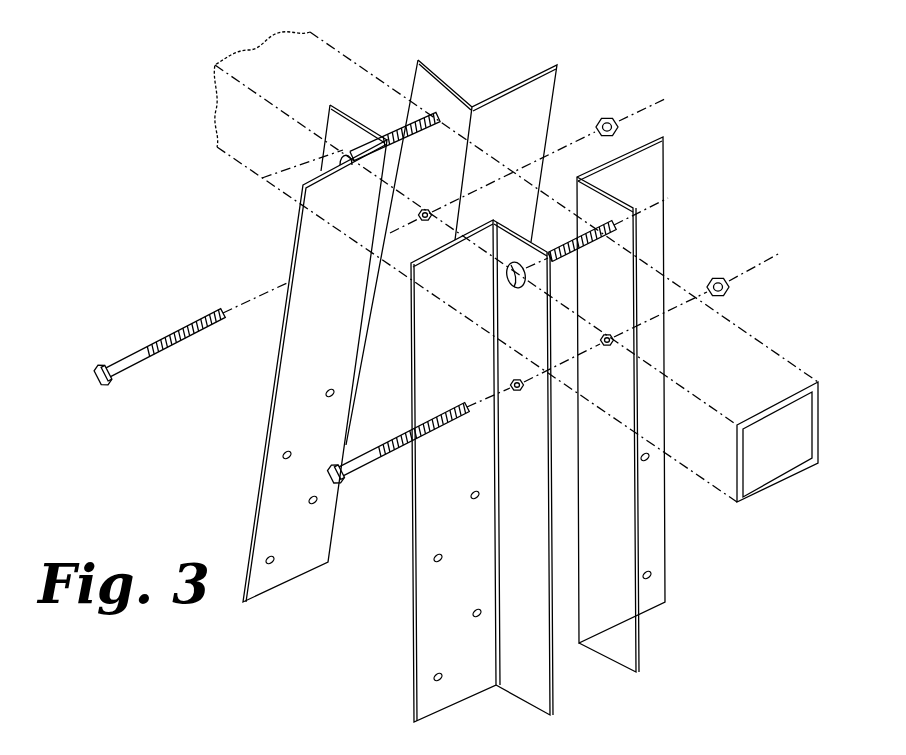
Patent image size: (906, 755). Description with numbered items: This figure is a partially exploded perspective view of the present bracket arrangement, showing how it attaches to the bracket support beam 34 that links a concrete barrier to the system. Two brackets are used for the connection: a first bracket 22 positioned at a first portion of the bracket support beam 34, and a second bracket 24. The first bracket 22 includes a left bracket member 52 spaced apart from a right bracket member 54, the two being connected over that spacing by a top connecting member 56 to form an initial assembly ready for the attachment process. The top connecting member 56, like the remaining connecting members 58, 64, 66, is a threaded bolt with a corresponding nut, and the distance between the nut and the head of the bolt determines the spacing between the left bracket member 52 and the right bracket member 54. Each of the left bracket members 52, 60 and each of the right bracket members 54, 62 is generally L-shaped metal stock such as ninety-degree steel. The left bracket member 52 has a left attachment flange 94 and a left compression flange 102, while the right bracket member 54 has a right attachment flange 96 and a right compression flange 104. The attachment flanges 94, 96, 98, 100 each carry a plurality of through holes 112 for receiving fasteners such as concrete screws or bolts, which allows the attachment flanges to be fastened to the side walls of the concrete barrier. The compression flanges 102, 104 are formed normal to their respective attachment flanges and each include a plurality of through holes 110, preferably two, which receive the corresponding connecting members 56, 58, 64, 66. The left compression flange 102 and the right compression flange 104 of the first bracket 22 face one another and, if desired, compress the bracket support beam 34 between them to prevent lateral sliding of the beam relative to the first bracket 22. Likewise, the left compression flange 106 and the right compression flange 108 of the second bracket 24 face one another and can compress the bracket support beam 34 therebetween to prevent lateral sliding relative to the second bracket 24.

The bracket 22 is at (406, 302).
The second bracket 24 is at (524, 430).
The bracket support beam 34 is at (785, 357).
The left bracket member 52 is at (298, 353).
The right bracket member 54 is at (474, 232).
The top connecting member 56 is at (397, 130).
The connecting member 58 is at (160, 337).
The left bracket member 60 is at (450, 487).
The right bracket member 62 is at (657, 422).
The connecting member 64 is at (588, 245).
The connecting member 66 is at (388, 468).
The left attachment flange 94 is at (347, 266).
The right attachment flange 96 is at (523, 133).
The left attachment flange 98 is at (467, 361).
The right attachment flange 100 is at (652, 188).
The left compression flange 102 is at (333, 147).
The right compression flange 104 is at (428, 97).
The left compression flange 106 is at (528, 681).
The right compression flange 108 is at (620, 640).
The through holes 110 is at (427, 225).
The through holes 112 is at (288, 451).